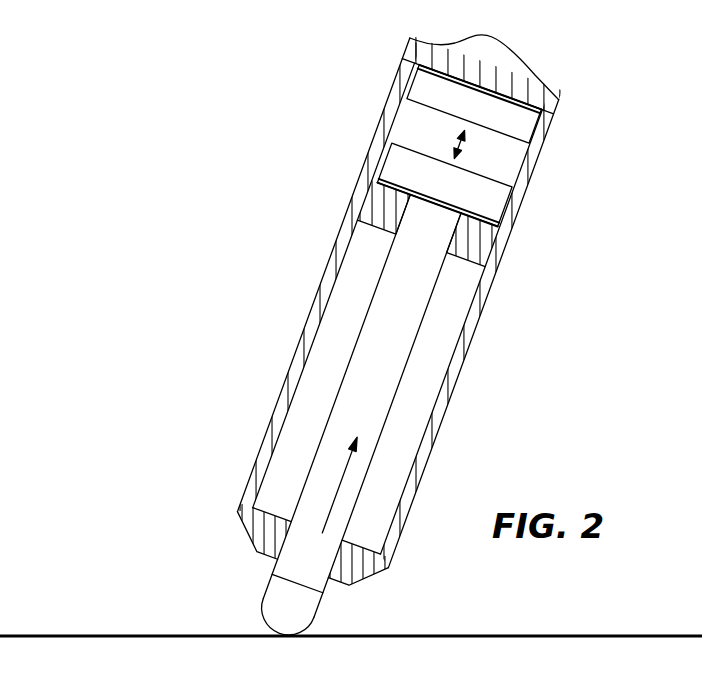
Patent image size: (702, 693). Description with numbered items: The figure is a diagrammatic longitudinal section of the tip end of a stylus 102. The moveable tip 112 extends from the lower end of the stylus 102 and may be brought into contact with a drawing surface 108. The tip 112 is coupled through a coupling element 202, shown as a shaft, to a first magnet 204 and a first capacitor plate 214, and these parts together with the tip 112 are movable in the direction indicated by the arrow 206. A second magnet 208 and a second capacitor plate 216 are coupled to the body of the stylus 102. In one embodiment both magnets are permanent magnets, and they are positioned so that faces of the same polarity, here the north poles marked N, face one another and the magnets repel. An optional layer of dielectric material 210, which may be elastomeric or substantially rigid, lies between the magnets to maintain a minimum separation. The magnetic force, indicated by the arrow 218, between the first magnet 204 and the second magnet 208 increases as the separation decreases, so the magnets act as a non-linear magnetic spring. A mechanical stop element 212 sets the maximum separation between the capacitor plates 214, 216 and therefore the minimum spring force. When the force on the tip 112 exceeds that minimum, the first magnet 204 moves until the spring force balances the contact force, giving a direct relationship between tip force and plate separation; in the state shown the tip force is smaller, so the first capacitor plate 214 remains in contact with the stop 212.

The stylus 102 is at (327, 270).
The drawing surface 108 is at (120, 635).
The moveable tip 112 is at (317, 618).
The coupling element 202 is at (427, 320).
The first magnet 204 is at (500, 209).
The arrow 206 is at (337, 488).
The second magnet 208 is at (543, 111).
The layer of dielectric material 210 is at (480, 175).
The mechanical stop element 212 is at (478, 240).
The first capacitor plate 214 is at (370, 187).
The second capacitor plate 216 is at (415, 68).
The arrow 218 is at (400, 117).